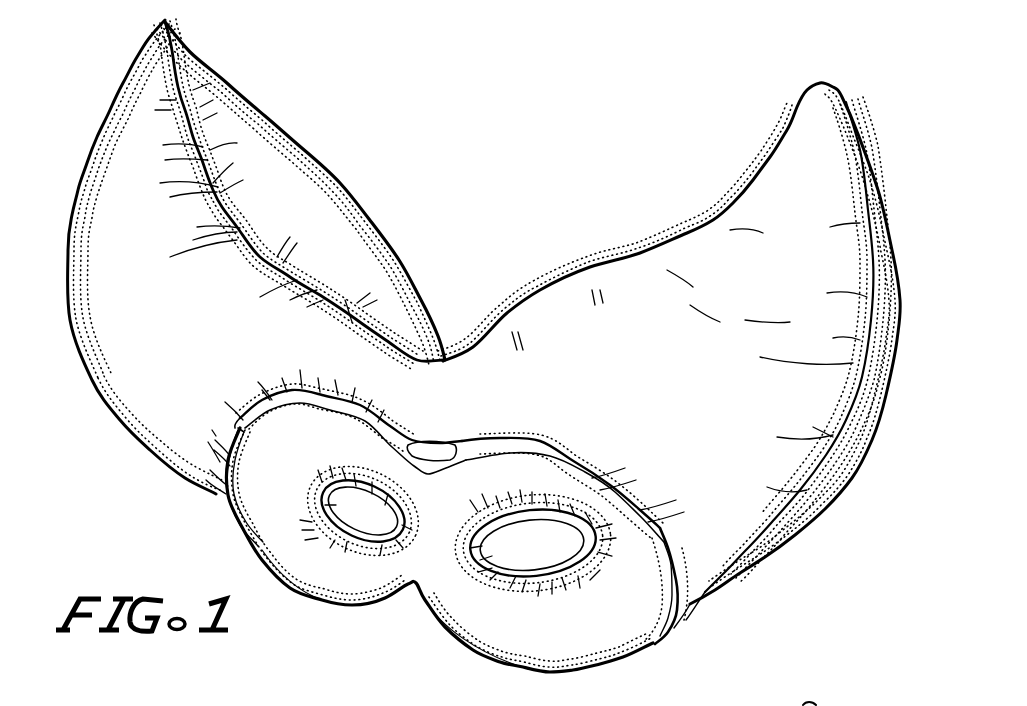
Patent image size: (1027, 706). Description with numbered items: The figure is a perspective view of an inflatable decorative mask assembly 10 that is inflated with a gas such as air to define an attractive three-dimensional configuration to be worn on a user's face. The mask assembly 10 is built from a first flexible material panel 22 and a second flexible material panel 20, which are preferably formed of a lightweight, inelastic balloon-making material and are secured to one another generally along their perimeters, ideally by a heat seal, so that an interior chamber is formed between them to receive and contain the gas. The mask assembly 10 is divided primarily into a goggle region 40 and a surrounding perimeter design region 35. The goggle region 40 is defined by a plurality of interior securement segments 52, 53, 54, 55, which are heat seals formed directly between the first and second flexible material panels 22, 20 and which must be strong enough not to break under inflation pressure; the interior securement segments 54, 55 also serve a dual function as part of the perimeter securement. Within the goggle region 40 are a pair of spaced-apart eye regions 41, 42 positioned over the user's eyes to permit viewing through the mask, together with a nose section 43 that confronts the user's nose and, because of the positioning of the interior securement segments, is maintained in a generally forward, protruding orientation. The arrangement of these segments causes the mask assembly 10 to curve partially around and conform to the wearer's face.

The inflatable decorative mask assembly 10 is at (608, 179).
The second flexible material panel 20 is at (150, 330).
The first flexible material panel 22 is at (328, 219).
The perimeter design region 35 is at (700, 378).
The goggle region 40 is at (505, 614).
The eye region 41 is at (550, 558).
The eye region 42 is at (358, 516).
The nose section 43 is at (423, 556).
The interior securement segment 52 is at (527, 450).
The interior securement segment 53 is at (308, 396).
The interior securement segment 54 is at (318, 603).
The interior securement segment 55 is at (448, 633).